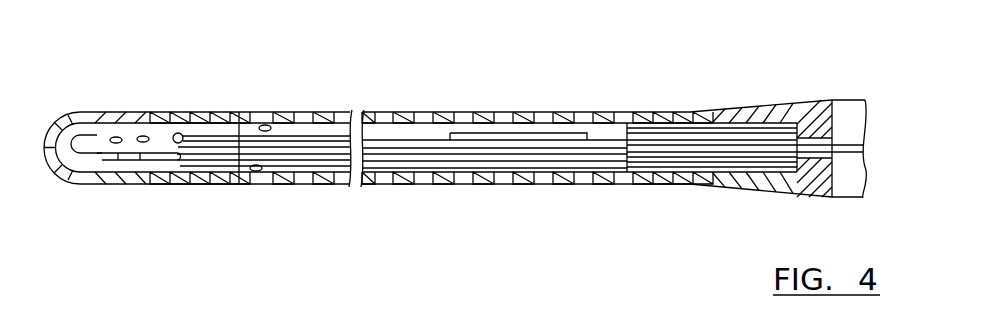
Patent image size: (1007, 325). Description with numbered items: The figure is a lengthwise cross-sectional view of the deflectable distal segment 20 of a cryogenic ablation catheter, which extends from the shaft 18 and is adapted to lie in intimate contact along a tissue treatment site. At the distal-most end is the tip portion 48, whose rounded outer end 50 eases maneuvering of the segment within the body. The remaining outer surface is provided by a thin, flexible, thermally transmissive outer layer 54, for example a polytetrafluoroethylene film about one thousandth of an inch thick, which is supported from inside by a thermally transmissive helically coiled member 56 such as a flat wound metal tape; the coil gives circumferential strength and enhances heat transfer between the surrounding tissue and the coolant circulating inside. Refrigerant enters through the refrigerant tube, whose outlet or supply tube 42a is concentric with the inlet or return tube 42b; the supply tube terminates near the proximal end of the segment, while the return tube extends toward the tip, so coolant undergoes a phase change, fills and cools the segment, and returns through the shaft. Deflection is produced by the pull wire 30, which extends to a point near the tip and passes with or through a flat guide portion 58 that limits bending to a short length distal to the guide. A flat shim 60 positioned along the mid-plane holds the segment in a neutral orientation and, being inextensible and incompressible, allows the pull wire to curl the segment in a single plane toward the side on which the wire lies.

The shaft 18 is at (855, 108).
The deflectable distal segment 20 is at (552, 111).
The pull wire 30 is at (622, 127).
The outlet tube 42a is at (710, 165).
The inlet tube 42b is at (612, 158).
The tip portion 48 is at (80, 188).
The rounded outer end 50 is at (48, 118).
The thermally transmissive outer layer 54 is at (305, 110).
The helically coiled member 56 is at (240, 185).
The flat guide portion 58 is at (468, 133).
The flat shim 60 is at (508, 157).